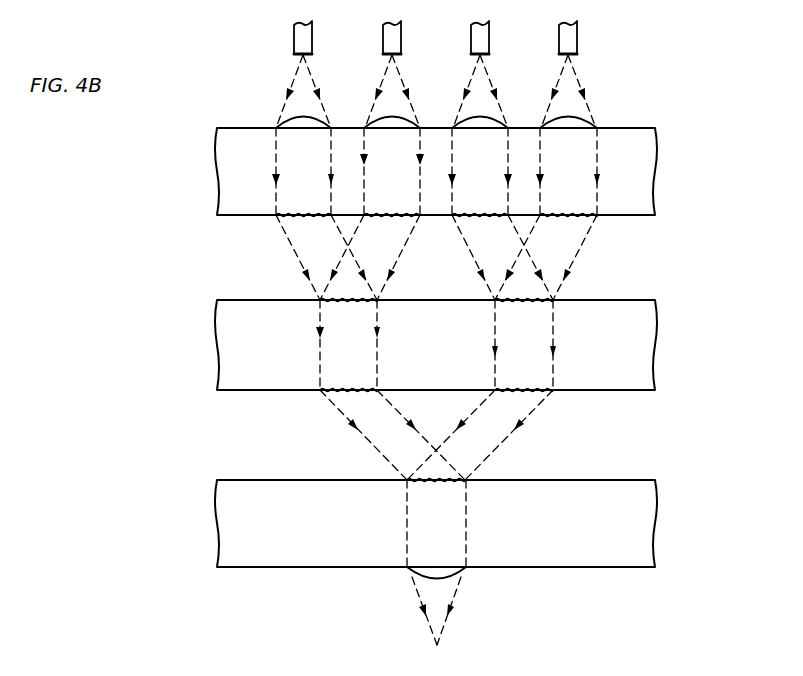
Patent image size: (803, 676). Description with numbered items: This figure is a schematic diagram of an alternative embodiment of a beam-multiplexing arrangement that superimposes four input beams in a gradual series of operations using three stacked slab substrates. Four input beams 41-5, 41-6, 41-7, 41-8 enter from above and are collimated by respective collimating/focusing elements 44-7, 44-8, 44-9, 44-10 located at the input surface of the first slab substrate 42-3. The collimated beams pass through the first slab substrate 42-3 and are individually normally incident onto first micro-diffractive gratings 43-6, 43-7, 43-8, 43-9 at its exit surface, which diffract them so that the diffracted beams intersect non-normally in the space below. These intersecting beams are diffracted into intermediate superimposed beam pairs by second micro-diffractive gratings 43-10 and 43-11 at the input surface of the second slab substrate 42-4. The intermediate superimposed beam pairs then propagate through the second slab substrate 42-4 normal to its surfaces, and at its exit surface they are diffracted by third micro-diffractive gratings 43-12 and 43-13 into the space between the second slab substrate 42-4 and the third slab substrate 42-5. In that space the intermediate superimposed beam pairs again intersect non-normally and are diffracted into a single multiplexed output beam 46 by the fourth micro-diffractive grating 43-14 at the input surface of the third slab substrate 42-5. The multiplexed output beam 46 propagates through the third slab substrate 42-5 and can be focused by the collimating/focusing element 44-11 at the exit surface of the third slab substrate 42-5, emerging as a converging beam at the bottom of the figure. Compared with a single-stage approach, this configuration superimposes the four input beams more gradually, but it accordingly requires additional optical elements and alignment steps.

The input beam 41-5 is at (292, 76).
The input beam 41-6 is at (386, 72).
The input beam 41-7 is at (487, 72).
The input beam 41-8 is at (577, 74).
The first slab substrate 42-3 is at (217, 165).
The second slab substrate 42-4 is at (217, 358).
The third slab substrate 42-5 is at (217, 533).
The first micro-diffractive grating 43-6 is at (282, 220).
The first micro-diffractive grating 43-7 is at (400, 217).
The first micro-diffractive grating 43-8 is at (456, 218).
The first micro-diffractive grating 43-9 is at (598, 222).
The second micro-diffractive grating 43-10 is at (322, 298).
The second micro-diffractive grating 43-11 is at (552, 298).
The third micro-diffractive grating 43-12 is at (325, 395).
The third micro-diffractive grating 43-13 is at (550, 395).
The fourth micro-diffractive grating 43-14 is at (470, 480).
The collimating/focusing element 44-7 is at (286, 120).
The collimating/focusing element 44-8 is at (405, 120).
The collimating/focusing element 44-9 is at (493, 120).
The collimating/focusing element 44-10 is at (578, 116).
The collimating/focusing element 44-11 is at (410, 577).
The multiplexed output beam 46 is at (458, 585).